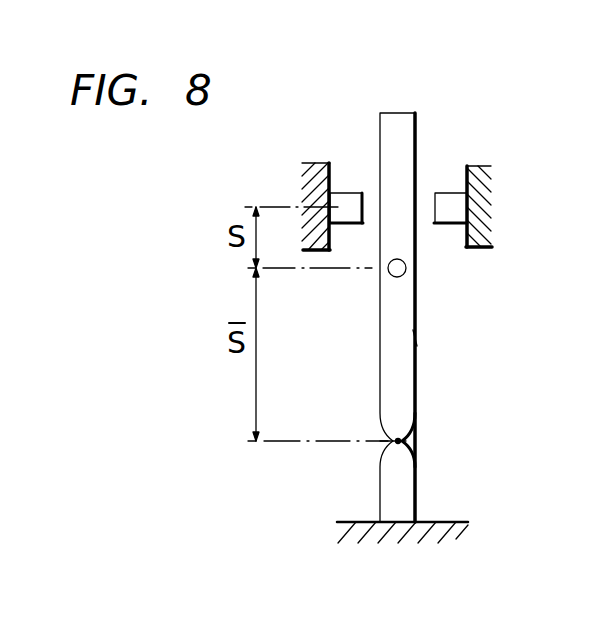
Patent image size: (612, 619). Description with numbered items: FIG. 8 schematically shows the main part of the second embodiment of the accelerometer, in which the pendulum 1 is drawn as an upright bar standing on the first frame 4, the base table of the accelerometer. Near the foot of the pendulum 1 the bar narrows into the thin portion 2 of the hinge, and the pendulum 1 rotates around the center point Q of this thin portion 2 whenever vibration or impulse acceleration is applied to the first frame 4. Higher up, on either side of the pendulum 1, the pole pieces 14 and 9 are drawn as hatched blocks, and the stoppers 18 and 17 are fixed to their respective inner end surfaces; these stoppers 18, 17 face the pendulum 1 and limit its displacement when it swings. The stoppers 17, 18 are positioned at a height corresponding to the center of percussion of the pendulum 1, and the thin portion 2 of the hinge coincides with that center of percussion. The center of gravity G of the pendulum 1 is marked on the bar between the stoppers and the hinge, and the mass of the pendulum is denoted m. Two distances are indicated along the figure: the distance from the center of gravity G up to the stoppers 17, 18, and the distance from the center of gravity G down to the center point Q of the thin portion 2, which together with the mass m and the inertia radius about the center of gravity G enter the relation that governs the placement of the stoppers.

The pendulum 1 is at (415, 113).
The pole piece 14 is at (304, 183).
The stopper 18 is at (352, 192).
The stopper 17 is at (455, 193).
The pole piece 9 is at (492, 179).
The first frame 4 is at (407, 538).
The center of gravity G is at (407, 268).
The mass of the pendulum m is at (415, 338).
The center point Q is at (405, 426).
The thin portion 2 is at (404, 452).